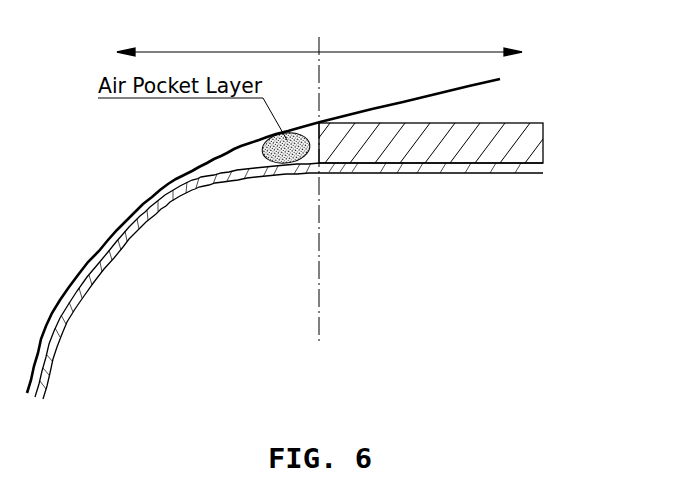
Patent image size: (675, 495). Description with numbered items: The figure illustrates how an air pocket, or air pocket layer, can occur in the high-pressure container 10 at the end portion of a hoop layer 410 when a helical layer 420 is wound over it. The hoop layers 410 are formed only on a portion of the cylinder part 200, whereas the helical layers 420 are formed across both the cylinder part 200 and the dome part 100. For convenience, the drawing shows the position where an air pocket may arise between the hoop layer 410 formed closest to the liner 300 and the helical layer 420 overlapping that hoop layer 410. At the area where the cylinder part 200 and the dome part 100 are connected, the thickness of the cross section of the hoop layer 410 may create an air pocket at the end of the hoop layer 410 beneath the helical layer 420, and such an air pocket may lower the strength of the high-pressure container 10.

The high-pressure container 10 is at (354, 241).
The dome part 100 is at (218, 42).
The cylinder part 200 is at (420, 42).
The liner 300 is at (90, 262).
The hoop layer 410 is at (527, 133).
The helical layer 420 is at (195, 153).